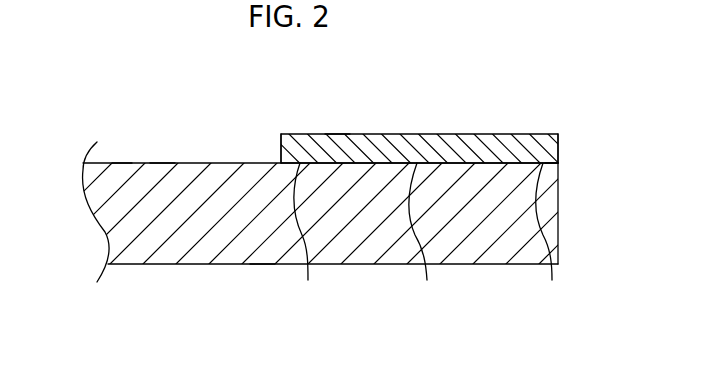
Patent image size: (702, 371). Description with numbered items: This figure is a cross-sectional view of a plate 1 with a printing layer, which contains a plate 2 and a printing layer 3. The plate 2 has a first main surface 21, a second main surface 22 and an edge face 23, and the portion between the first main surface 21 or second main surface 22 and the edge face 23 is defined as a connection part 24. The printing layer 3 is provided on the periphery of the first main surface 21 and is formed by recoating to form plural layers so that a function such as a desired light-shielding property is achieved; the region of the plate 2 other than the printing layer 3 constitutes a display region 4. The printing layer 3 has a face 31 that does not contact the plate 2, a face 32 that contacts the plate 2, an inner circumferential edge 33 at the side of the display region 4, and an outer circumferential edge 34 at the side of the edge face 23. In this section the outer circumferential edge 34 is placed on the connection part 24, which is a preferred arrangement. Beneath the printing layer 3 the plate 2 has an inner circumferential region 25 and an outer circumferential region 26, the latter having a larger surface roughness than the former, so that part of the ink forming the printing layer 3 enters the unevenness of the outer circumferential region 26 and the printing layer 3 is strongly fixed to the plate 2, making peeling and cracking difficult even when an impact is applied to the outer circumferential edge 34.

The plate with a printing layer 1 is at (455, 99).
The plate 2 is at (173, 258).
The printing layer 3 is at (397, 148).
The display region 4 is at (122, 163).
The first main surface 21 is at (162, 163).
The second main surface 22 is at (262, 265).
The edge face 23 is at (558, 228).
The connection part 24 is at (558, 164).
The inner circumferential region 25 is at (307, 265).
The outer circumferential region 26 is at (555, 265).
The face 31 is at (338, 134).
The face 32 is at (427, 265).
The inner circumferential edge 33 is at (281, 147).
The outer circumferential edge 34 is at (558, 148).